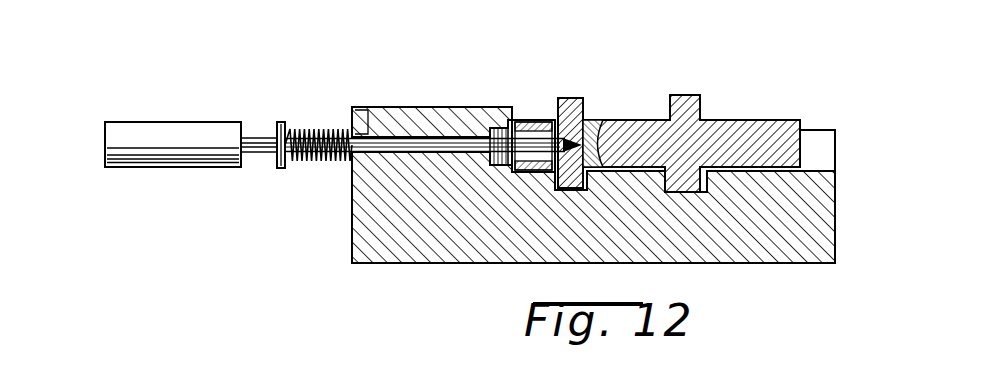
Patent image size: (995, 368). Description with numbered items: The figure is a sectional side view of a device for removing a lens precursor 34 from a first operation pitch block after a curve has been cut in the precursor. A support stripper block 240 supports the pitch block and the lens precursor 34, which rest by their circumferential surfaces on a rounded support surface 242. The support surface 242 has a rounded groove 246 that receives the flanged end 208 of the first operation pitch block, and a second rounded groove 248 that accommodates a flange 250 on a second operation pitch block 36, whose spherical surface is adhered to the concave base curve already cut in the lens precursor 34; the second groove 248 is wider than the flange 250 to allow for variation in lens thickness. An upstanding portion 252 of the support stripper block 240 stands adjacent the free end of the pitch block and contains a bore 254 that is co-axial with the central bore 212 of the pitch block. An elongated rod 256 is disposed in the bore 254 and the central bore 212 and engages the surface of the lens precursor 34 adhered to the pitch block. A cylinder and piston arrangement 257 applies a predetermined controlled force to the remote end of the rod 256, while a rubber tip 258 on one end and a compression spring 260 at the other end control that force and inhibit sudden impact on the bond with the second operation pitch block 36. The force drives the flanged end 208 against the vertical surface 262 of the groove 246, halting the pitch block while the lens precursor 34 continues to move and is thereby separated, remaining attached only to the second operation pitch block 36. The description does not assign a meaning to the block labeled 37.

The lens precursor 34 is at (597, 122).
The second operation pitch block 36 is at (565, 92).
The manifold block 37 is at (797, 120).
The flanged end 208 is at (579, 112).
The central bore 212 is at (528, 118).
The support stripper block 240 is at (830, 222).
The rounded support surface 242 is at (523, 182).
The rounded groove 246 is at (558, 192).
The second rounded groove 248 is at (705, 193).
The flange 250 is at (703, 95).
The upstanding portion 252 is at (422, 110).
The bore 254 is at (410, 150).
The elongated rod 256 is at (361, 114).
The cylinder and piston arrangement 257 is at (207, 158).
The rubber tip 258 is at (615, 121).
The compression spring 260 is at (320, 163).
The vertical surface 262 is at (608, 180).